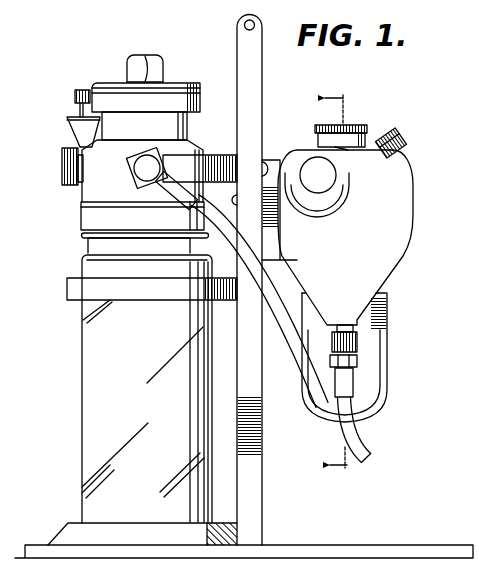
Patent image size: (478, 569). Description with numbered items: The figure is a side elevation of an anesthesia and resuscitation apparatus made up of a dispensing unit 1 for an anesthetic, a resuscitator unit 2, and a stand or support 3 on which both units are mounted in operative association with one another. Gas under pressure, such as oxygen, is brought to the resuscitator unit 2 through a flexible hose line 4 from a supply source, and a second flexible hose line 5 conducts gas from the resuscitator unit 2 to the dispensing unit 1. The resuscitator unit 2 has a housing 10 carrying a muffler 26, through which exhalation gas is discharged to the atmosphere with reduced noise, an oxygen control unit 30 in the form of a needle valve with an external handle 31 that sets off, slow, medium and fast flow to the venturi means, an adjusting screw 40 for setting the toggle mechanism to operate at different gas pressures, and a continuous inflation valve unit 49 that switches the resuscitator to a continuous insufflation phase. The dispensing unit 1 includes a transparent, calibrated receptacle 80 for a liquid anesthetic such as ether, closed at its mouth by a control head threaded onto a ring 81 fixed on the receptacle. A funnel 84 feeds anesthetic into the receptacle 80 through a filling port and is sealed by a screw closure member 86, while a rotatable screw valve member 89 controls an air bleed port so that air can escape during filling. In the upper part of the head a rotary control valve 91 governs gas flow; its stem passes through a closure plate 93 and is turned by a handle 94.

The dispensing unit 1 is at (92, 40).
The resuscitator unit 2 is at (423, 193).
The stand or support 3 is at (267, 440).
The flexible hose line 4 is at (360, 443).
The flexible hose line 5 is at (293, 370).
The housing 10 is at (400, 255).
The muffler 26 is at (385, 315).
The oxygen control unit 30 is at (360, 127).
The handle 31 is at (315, 128).
The adjusting screw 40 is at (325, 166).
The continuous inflation valve unit 49 is at (403, 143).
The receptacle 80 is at (92, 428).
The ring 81 is at (88, 218).
The funnel 84 is at (72, 127).
The screw closure member 86 is at (75, 97).
The rotatable screw valve member 89 is at (63, 162).
The rotary control valve 91 is at (152, 54).
The closure plate 93 is at (105, 85).
The handle 94 is at (124, 62).